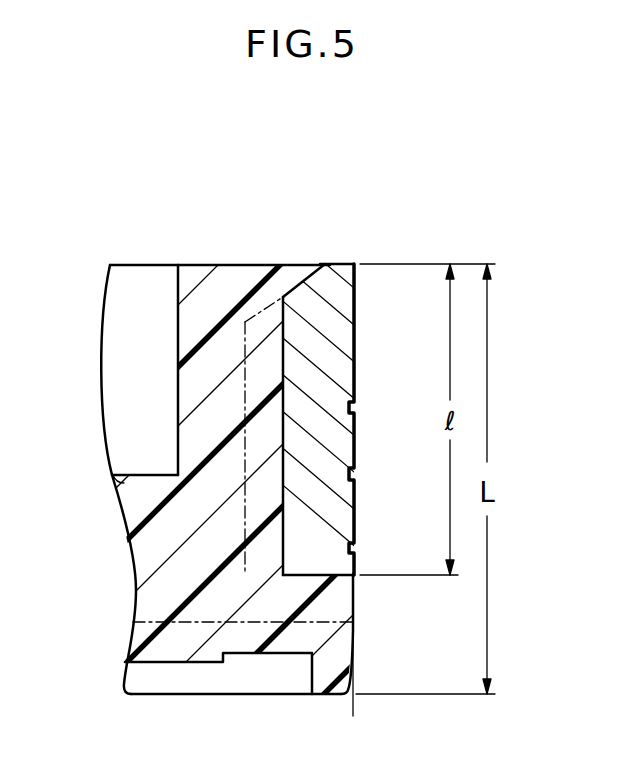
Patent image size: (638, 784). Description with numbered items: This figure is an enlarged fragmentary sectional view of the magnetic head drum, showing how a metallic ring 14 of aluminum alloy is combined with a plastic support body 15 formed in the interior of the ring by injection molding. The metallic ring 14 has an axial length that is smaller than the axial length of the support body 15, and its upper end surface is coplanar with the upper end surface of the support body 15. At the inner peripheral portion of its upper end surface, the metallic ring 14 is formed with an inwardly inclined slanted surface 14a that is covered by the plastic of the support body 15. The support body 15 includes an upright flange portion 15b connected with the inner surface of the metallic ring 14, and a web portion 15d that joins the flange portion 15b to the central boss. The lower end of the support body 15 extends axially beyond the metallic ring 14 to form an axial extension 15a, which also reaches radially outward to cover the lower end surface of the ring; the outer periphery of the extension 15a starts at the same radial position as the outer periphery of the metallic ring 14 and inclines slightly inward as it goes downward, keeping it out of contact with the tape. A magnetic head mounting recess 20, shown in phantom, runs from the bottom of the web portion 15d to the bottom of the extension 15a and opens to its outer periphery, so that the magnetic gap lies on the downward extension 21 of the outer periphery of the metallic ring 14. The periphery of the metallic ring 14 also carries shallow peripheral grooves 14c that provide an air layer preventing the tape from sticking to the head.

The metallic ring 14 is at (353, 369).
The inwardly inclined slanted surface 14a is at (308, 266).
The shallow peripheral grooves 14c is at (354, 405).
The support body 15 is at (199, 262).
The axial extension 15a is at (330, 580).
The upright flange portion 15b is at (188, 414).
The web portion 15d is at (150, 566).
The magnetic head mounting recess 20 is at (213, 605).
The downward extension of the outer periphery of the metallic ring 21 is at (358, 673).